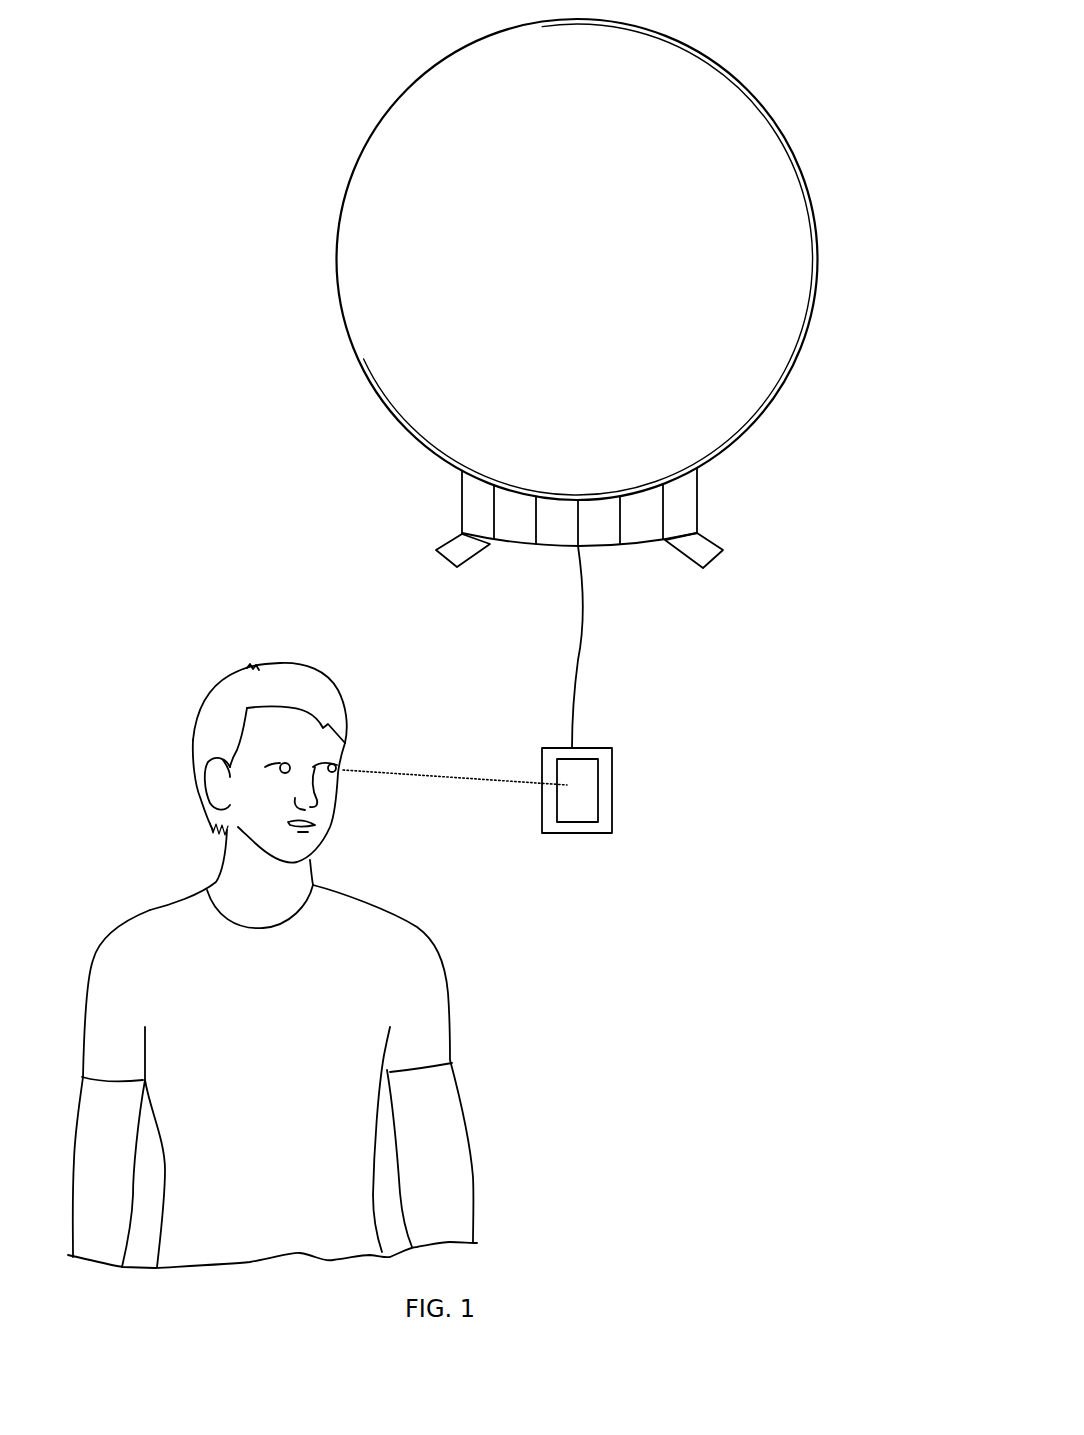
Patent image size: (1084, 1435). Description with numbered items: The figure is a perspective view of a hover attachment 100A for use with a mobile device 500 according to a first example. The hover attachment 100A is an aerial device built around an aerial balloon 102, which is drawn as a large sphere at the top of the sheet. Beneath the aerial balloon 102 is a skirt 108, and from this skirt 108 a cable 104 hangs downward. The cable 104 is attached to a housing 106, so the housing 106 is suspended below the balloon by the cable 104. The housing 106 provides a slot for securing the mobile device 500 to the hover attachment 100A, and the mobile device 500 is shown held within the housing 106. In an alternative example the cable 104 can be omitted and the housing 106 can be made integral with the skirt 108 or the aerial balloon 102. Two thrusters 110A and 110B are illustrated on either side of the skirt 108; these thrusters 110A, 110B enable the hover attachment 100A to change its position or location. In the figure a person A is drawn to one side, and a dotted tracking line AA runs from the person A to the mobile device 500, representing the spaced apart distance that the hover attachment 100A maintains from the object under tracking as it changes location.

The hover attachment 100A is at (595, 473).
The aerial balloon 102 is at (817, 240).
The skirt 108 is at (695, 498).
The thruster 110A is at (708, 555).
The thruster 110B is at (437, 548).
The cable 104 is at (578, 658).
The housing 106 is at (651, 838).
The mobile device 500 is at (585, 779).
The user A is at (220, 703).
The Line AA is at (430, 773).